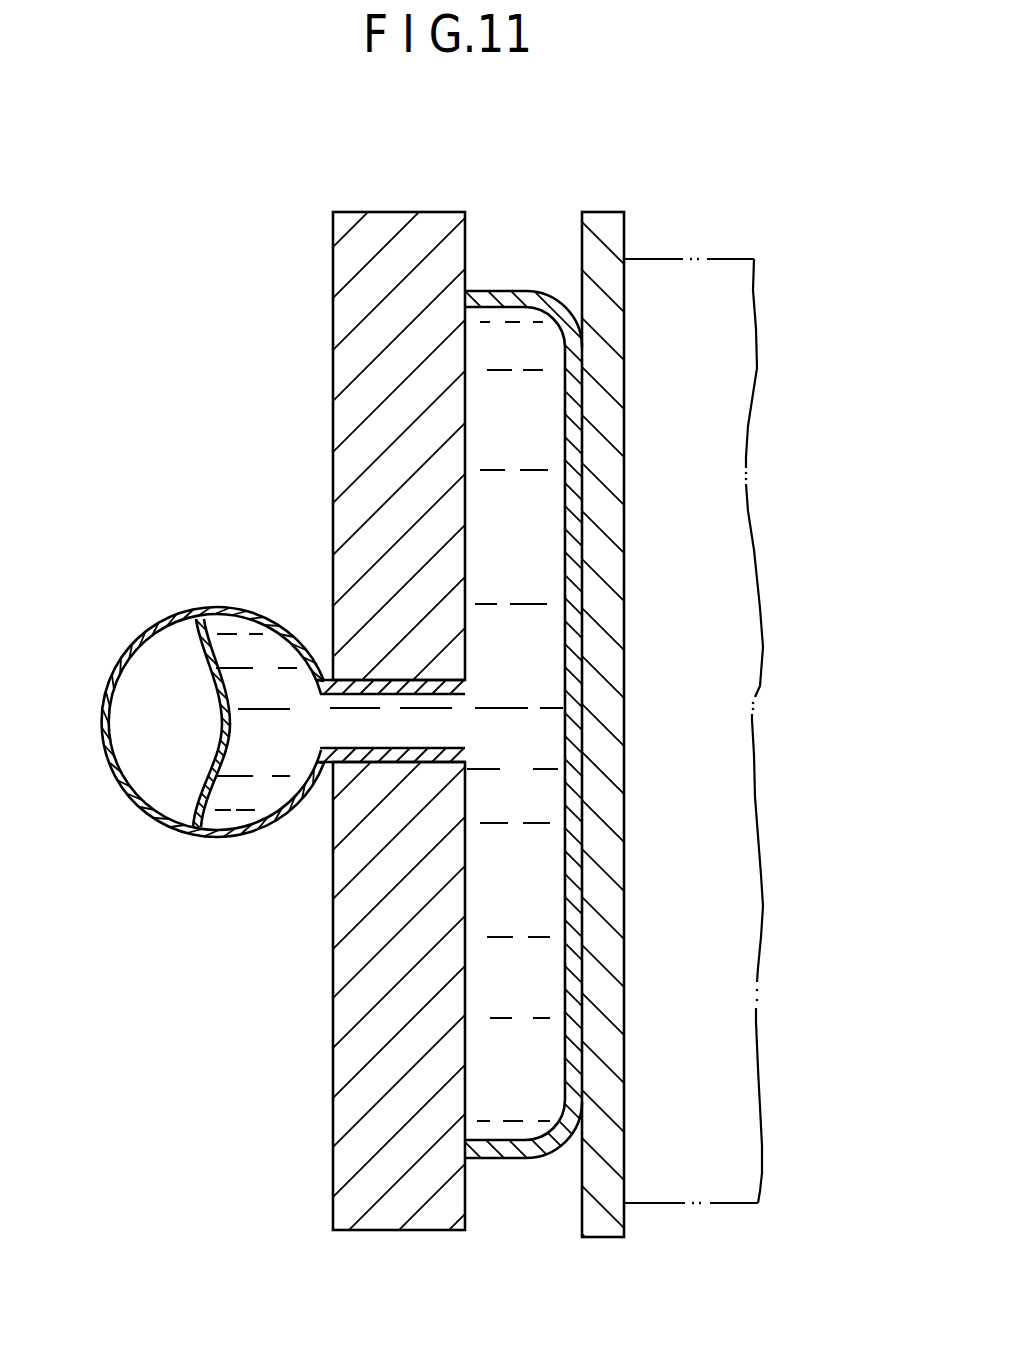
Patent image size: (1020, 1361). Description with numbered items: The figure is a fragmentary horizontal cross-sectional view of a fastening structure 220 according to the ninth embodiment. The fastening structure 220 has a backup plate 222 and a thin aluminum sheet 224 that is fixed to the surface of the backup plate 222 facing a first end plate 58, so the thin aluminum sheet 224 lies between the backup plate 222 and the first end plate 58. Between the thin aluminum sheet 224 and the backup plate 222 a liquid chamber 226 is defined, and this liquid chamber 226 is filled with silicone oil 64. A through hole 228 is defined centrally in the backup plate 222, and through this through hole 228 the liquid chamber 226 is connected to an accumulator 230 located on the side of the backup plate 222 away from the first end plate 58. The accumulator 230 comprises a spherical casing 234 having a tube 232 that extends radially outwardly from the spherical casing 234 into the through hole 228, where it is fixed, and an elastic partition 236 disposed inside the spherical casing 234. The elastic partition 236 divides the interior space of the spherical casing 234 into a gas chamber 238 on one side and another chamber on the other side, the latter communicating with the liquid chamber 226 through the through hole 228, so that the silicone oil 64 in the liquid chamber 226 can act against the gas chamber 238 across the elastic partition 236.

The fastening structure 220 is at (565, 131).
The first end plate 58 is at (628, 244).
The silicone oil 64 is at (485, 432).
The backup plate 222 is at (363, 343).
The thin aluminum sheet 224 is at (498, 300).
The liquid chamber 226 is at (575, 915).
The through hole 228 is at (404, 755).
The accumulator 230 is at (198, 596).
The tube 232 is at (377, 683).
The spherical casing 234 is at (122, 622).
The elastic partition 236 is at (220, 719).
The gas chamber 238 is at (148, 768).